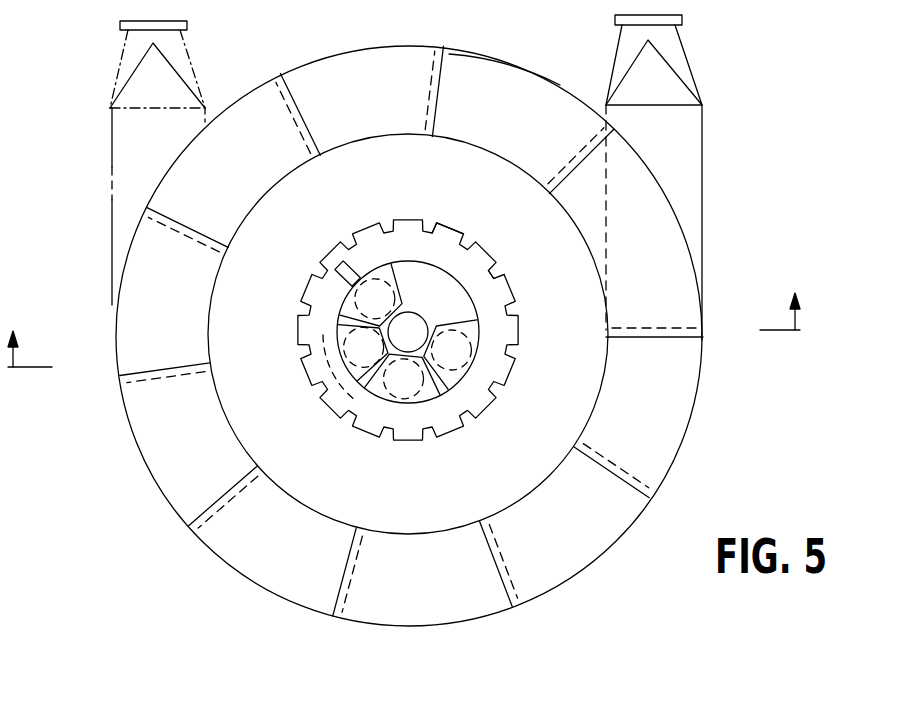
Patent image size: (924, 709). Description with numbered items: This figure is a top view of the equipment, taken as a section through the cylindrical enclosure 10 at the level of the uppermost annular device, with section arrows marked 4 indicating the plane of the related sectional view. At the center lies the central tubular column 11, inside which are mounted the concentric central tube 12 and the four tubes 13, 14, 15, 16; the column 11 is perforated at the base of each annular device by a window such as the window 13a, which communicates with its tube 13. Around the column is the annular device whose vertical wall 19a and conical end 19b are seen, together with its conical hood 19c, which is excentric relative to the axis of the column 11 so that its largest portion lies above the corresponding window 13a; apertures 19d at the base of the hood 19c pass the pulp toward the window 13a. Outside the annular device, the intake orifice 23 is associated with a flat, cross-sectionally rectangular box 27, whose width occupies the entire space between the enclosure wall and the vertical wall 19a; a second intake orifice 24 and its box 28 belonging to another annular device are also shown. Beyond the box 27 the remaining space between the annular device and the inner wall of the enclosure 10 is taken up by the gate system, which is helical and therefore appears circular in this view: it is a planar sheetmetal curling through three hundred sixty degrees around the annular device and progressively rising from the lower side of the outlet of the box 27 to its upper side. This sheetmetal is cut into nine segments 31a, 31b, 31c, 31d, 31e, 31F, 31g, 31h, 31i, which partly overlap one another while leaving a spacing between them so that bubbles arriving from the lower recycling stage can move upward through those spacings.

The section line 4- 4 is at (404, 350).
The cylindrical enclosure 10 is at (700, 410).
The central tubular column 11 is at (496, 289).
The central tube 12 is at (432, 326).
The tube 13 is at (340, 308).
The window 13a is at (348, 266).
The tube 14 is at (290, 358).
The tube 15 is at (401, 410).
The tube 16 is at (480, 377).
The vertical wall 19a is at (585, 241).
The conical end 19b is at (585, 331).
The conical hood 19c is at (487, 264).
The apertures 19d is at (440, 236).
The intake orifice 23 is at (684, 21).
The intake orifice 24 is at (118, 26).
The box 27 is at (703, 135).
The box 28 is at (112, 167).
The segment 31a is at (646, 455).
The segment 31b is at (538, 563).
The segment 31c is at (399, 606).
The segment 31d is at (272, 566).
The segment 31e is at (157, 447).
The segment 31F is at (135, 327).
The segment 31g is at (250, 117).
The segment 31h is at (395, 58).
The segment 31i is at (537, 88).